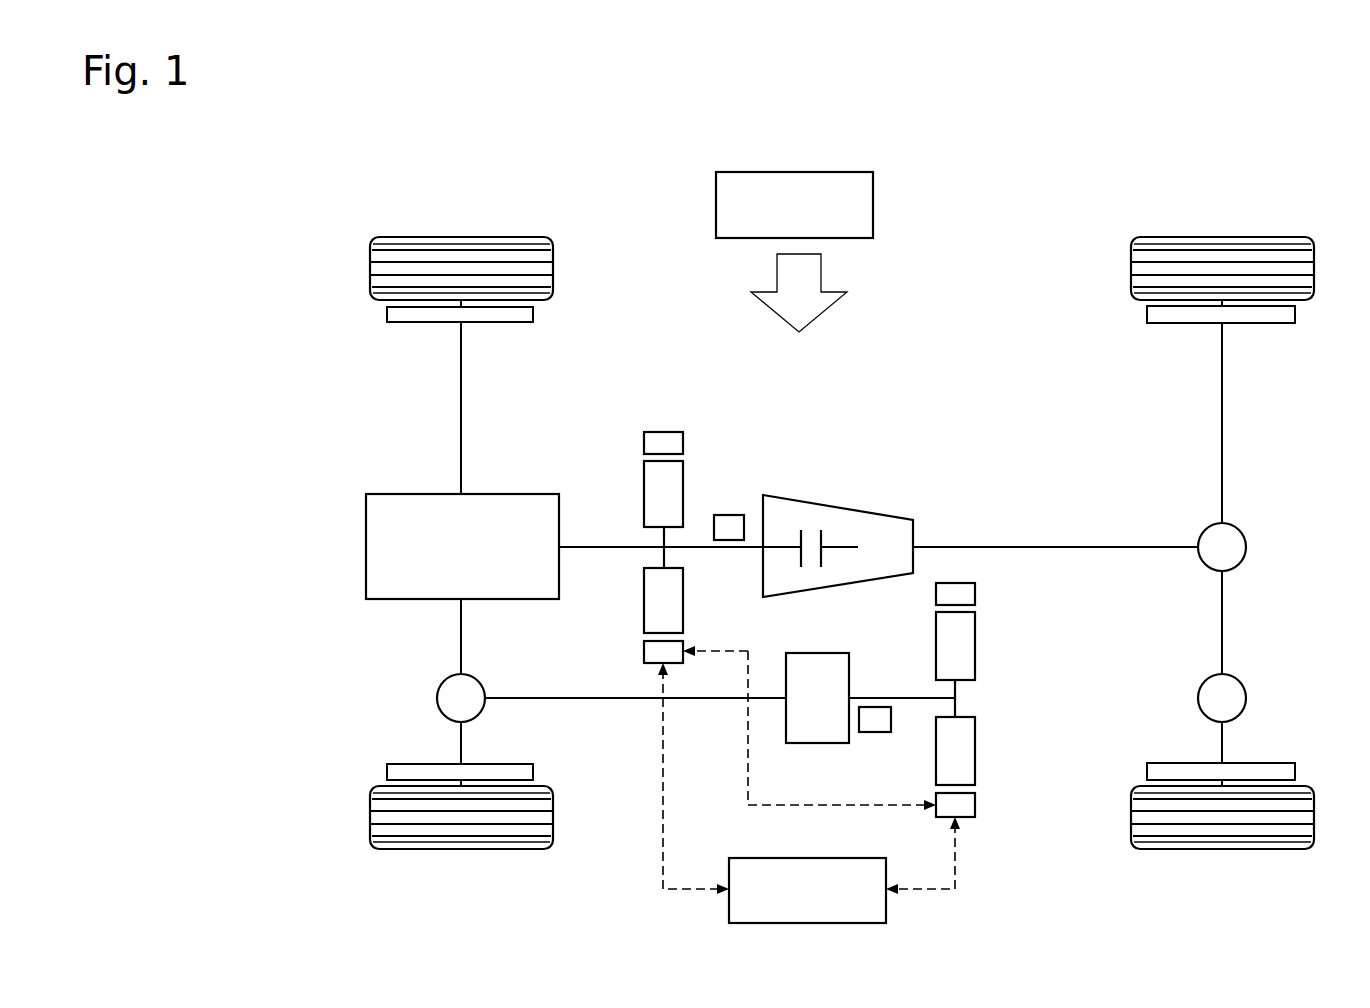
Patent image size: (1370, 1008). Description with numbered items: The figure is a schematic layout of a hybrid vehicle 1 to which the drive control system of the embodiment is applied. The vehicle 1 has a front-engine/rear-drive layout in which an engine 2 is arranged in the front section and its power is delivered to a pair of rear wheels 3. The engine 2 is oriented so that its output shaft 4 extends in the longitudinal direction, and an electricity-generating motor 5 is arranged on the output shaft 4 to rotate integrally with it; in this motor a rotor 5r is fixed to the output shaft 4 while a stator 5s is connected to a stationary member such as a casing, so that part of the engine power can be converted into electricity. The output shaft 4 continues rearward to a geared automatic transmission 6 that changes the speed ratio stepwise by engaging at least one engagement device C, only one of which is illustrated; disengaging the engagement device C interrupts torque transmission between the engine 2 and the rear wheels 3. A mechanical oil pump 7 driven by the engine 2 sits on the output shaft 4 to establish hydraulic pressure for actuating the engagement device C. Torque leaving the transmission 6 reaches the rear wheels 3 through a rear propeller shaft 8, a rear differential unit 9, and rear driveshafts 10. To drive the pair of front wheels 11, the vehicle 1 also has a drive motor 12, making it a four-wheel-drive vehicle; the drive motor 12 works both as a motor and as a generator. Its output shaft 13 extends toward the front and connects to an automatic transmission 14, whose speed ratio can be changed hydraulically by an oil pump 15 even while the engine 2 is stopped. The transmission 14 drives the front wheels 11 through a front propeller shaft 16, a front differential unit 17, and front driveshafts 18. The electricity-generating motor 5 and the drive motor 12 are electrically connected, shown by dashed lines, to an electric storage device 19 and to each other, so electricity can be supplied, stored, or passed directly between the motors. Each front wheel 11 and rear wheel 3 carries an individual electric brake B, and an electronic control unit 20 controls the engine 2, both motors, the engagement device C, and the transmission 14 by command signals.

The hybrid vehicle 1 is at (308, 418).
The engine 2 is at (366, 546).
The rear wheels 3 is at (1225, 237).
The output shaft 4 is at (604, 545).
The electricity-generating motor 5 is at (689, 505).
The stator 5s is at (683, 442).
The rotor 5r is at (683, 477).
The geared automatic transmission 6 is at (838, 518).
The oil pump 7 is at (733, 515).
The rear propeller shaft 8 is at (1036, 545).
The rear differential unit 9 is at (1246, 550).
The rear driveshafts 10 is at (1222, 449).
The front wheels 11 is at (472, 237).
The drive motor 12 is at (992, 641).
The output shaft 13 is at (898, 697).
The automatic transmission 14 is at (821, 653).
The oil pump 15 is at (878, 733).
The front propeller shaft 16 is at (581, 696).
The front differential unit 17 is at (437, 699).
The front driveshafts 18 is at (461, 412).
The electric storage device 19 is at (803, 925).
The electronic control unit 20 is at (873, 207).
The electric brake B is at (387, 316).
The engagement device C is at (809, 521).